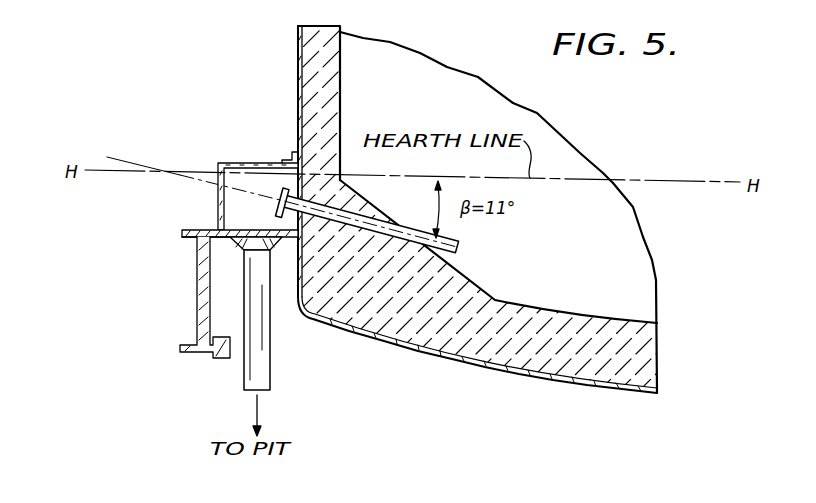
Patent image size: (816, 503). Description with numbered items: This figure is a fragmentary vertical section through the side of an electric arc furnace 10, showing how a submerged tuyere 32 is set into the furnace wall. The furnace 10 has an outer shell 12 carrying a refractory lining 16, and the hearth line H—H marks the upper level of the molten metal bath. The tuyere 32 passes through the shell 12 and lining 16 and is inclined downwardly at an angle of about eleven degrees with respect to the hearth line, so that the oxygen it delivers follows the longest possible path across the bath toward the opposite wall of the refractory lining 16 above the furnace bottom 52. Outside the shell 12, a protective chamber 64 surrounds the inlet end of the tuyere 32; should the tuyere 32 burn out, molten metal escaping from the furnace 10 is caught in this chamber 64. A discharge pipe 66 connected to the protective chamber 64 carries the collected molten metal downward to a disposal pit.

The furnace 10 is at (658, 236).
The shell 12 is at (298, 90).
The refractory lining 16 is at (545, 366).
The tuyere 32 is at (377, 232).
The furnace bottom 52 is at (566, 312).
The protective chamber 64 is at (218, 163).
The discharge pipe 66 is at (245, 368).